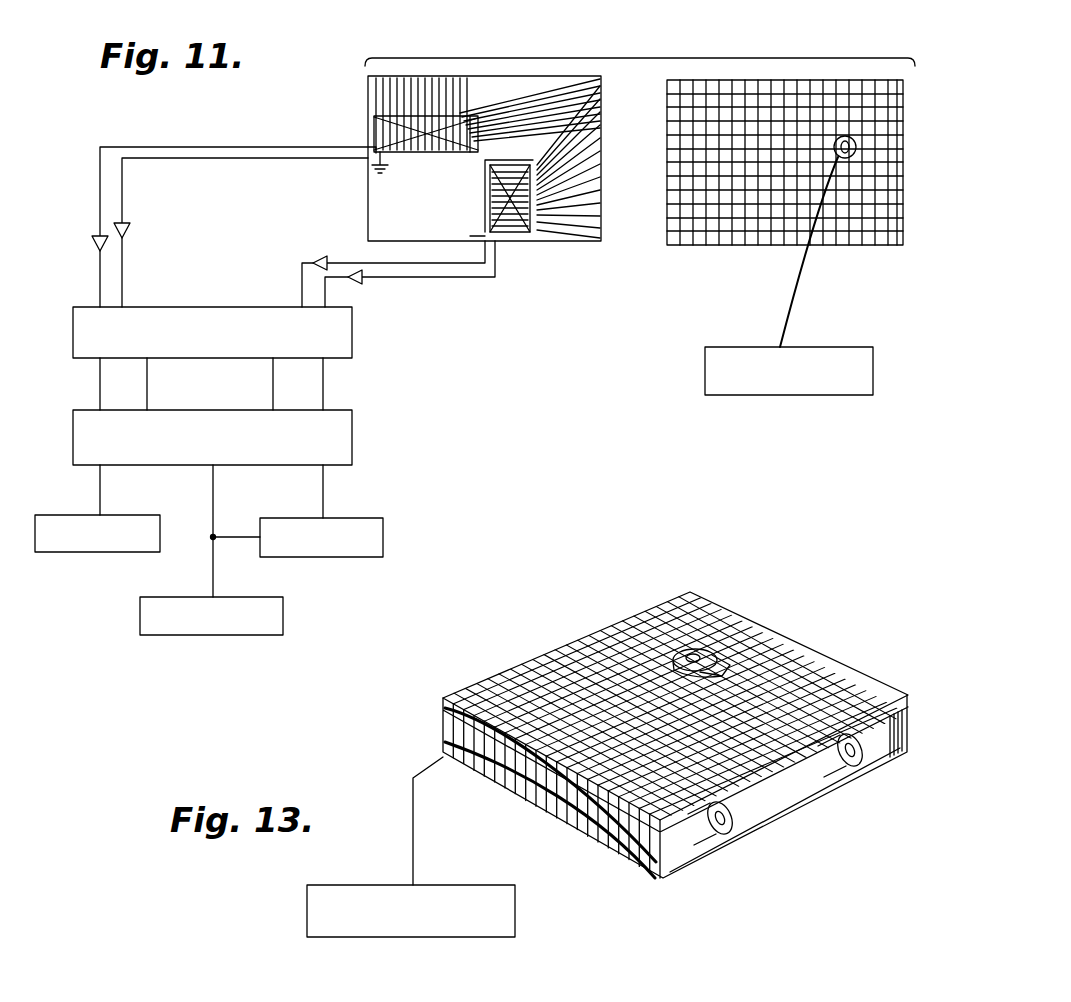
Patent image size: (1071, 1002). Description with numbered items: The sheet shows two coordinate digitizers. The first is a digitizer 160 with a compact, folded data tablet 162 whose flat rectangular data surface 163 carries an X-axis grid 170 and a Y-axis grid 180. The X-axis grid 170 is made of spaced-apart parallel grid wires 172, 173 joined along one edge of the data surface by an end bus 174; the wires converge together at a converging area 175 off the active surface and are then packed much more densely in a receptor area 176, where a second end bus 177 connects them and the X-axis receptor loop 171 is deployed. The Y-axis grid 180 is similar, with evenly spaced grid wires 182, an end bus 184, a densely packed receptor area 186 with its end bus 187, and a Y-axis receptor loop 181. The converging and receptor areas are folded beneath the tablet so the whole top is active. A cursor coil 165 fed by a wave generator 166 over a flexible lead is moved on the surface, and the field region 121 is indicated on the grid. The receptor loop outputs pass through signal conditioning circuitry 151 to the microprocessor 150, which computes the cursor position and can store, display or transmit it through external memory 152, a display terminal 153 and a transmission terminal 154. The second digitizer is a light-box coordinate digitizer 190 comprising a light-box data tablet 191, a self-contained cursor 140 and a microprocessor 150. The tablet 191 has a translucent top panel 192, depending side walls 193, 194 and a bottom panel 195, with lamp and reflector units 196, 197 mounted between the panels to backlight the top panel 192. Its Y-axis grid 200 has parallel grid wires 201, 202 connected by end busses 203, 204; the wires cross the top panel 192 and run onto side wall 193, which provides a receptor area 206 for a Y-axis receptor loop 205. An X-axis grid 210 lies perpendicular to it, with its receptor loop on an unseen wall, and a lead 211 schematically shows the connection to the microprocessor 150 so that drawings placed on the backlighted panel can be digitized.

In FIG. 11, the field line region 121 is at (895, 213).
In FIG. 13, the cursor 140 is at (744, 650).
In FIG. 11, the microprocessor 150 is at (352, 440).
In FIG. 13, the microprocessor 150 is at (478, 938).
In FIG. 11, the signal conditioning circuitry 151 is at (73, 317).
In FIG. 11, the external memory 152 is at (383, 548).
In FIG. 11, the display terminal 153 is at (62, 553).
In FIG. 11, the transmission terminal 154 is at (197, 636).
In FIG. 11, the digitizer 160 is at (128, 115).
In FIG. 11, the data tablet 162 is at (640, 43).
In FIG. 11, the data surface 163 is at (712, 215).
In FIG. 11, the cursor coil 165 is at (855, 155).
In FIG. 11, the wave generator 166 is at (855, 398).
In FIG. 11, the X-axis grid 170 is at (465, 74).
In FIG. 11, the X-axis receptor loop 171 is at (372, 125).
In FIG. 11, the grid wire 172 is at (868, 92).
In FIG. 11, the grid wire 173 is at (878, 113).
In FIG. 11, the end bus 174 is at (740, 248).
In FIG. 11, the converging area 175 is at (393, 86).
In FIG. 11, the receptor area 176 is at (478, 137).
In FIG. 11, the end bus 177 is at (422, 152).
In FIG. 11, the Y-axis grid 180 is at (592, 138).
In FIG. 11, the Y-axis receptor loop 181 is at (520, 182).
In FIG. 11, the grid wire 182 is at (697, 168).
In FIG. 11, the end bus 184 is at (901, 128).
In FIG. 11, the receptor area 186 is at (510, 228).
In FIG. 11, the end bus 187 is at (483, 203).
In FIG. 13, the light-box coordinate digitizer 190 is at (612, 580).
In FIG. 13, the light-box data tablet 191 is at (532, 656).
In FIG. 13, the translucent top panel 192 is at (612, 676).
In FIG. 13, the side wall 193 is at (672, 850).
In FIG. 13, the side wall 194 is at (893, 732).
In FIG. 13, the bottom panel 195 is at (790, 790).
In FIG. 13, the lamp and reflector unit 196 is at (738, 838).
In FIG. 13, the lamp and reflector unit 197 is at (852, 772).
In FIG. 13, the Y-axis grid 200 is at (778, 650).
In FIG. 13, the grid wire 201 is at (828, 650).
In FIG. 13, the grid wire 202 is at (848, 668).
In FIG. 13, the end bus 203 is at (875, 688).
In FIG. 13, the end bus 204 is at (572, 823).
In FIG. 13, the Y-axis receptor loop 205 is at (540, 786).
In FIG. 13, the receptor area 206 is at (628, 835).
In FIG. 13, the X-axis grid 210 is at (707, 648).
In FIG. 13, the lead 211 is at (413, 797).